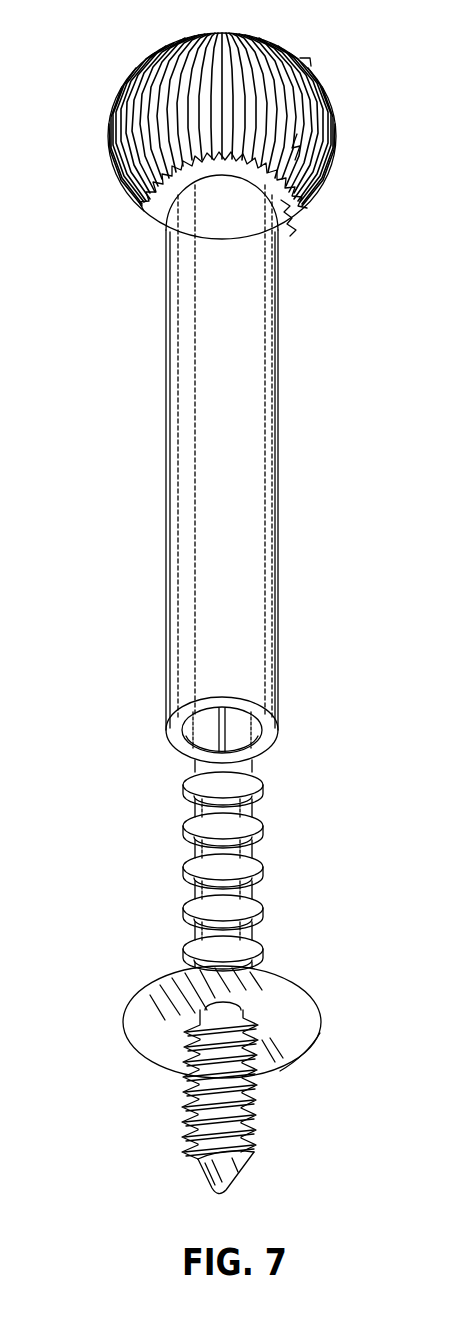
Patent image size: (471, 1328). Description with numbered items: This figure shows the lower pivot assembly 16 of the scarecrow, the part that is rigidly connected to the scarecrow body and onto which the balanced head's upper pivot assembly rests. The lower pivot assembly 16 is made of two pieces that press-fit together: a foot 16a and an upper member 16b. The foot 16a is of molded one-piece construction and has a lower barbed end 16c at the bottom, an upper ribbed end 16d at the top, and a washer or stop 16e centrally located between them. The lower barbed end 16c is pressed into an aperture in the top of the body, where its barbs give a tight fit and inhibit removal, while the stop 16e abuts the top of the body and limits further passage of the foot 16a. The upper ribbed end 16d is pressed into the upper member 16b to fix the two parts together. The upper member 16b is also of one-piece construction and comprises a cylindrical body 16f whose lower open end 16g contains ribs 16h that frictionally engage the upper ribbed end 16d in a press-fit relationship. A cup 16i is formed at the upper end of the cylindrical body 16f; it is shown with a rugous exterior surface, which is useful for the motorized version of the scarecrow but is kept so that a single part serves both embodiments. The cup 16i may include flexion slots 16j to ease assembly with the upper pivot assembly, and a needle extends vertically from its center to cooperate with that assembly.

The lower pivot assembly 16 is at (95, 720).
The foot 16a is at (97, 1013).
The upper member 16b is at (345, 398).
The lower barbed end 16c is at (262, 1128).
The upper ribbed end 16d is at (260, 857).
The stop 16e is at (316, 1000).
The cylindrical body 16f is at (265, 630).
The lower open end 16g is at (232, 742).
The ribs 16h is at (190, 733).
The cup 16i is at (127, 143).
The flexion slots 16j is at (303, 82).